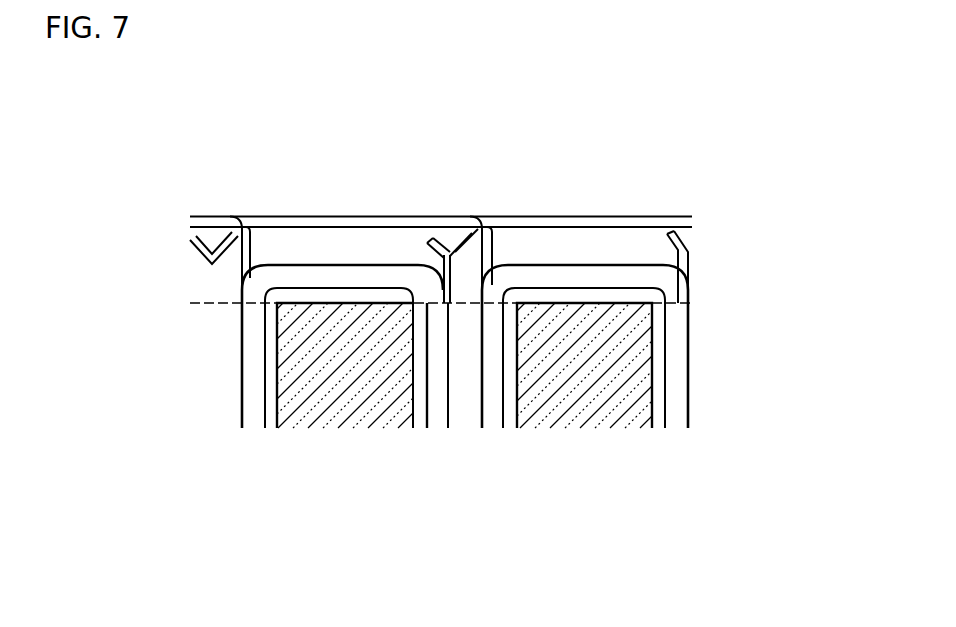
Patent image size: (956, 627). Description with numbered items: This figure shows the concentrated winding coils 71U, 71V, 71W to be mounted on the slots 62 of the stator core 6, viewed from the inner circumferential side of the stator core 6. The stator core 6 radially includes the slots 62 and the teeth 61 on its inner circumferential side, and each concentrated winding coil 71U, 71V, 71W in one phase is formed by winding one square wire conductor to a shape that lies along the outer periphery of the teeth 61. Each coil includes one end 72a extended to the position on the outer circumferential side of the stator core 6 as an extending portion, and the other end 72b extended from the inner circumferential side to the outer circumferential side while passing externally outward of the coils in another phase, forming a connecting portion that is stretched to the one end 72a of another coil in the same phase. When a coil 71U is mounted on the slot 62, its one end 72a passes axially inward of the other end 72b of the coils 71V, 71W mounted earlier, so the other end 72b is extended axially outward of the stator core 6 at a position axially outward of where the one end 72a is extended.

The stator core 6 is at (620, 434).
The teeth 61 is at (352, 405).
The slots 62 is at (467, 410).
The concentrated winding coil 71U is at (252, 370).
The concentrated winding coil 71V is at (456, 256).
The concentrated winding coil 71W is at (678, 366).
The one end 72a is at (432, 215).
The other end 72b is at (210, 215).